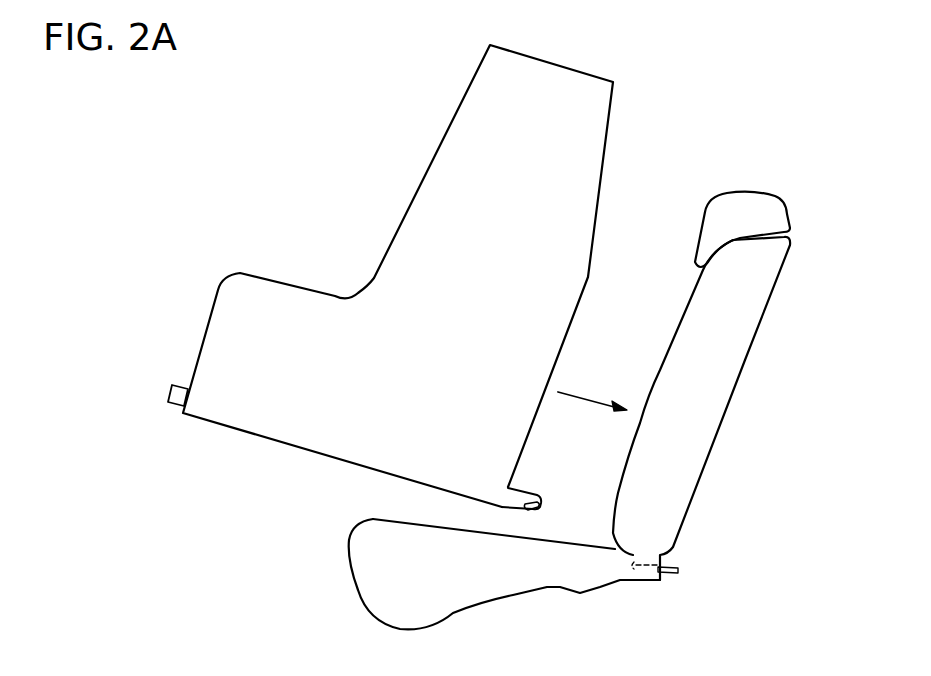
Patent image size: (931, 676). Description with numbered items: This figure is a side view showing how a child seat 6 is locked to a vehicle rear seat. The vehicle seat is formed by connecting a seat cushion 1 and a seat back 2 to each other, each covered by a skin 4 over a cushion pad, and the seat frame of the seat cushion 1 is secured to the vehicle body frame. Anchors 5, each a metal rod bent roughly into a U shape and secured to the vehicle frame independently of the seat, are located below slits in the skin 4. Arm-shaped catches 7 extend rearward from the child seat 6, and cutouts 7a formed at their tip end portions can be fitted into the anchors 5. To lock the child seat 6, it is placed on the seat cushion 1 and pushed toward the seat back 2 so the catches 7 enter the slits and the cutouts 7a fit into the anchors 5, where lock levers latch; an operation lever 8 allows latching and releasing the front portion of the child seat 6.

The seat cushion 1 is at (352, 577).
The seat back 2 is at (725, 385).
The skin 4 is at (393, 520).
The anchor 5 is at (637, 583).
The child seat 6 is at (272, 302).
The catch 7 is at (522, 498).
The cutout 7a is at (542, 501).
The operation lever 8 is at (171, 392).